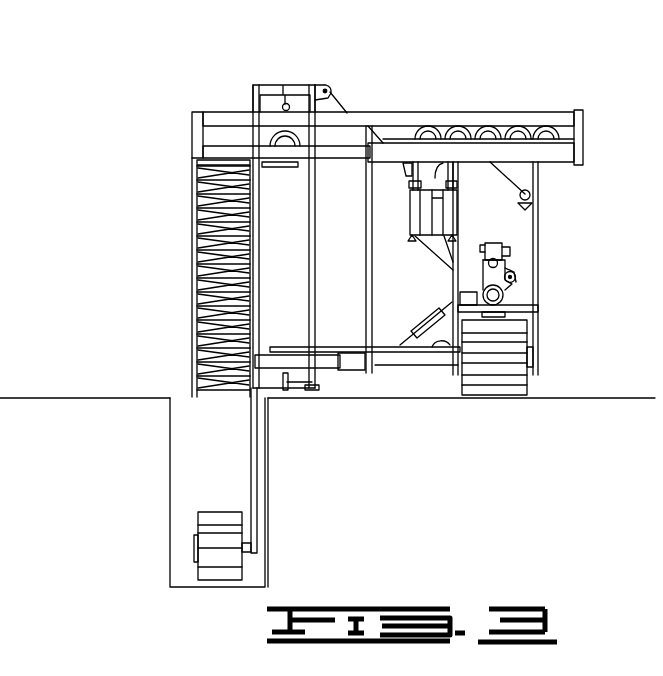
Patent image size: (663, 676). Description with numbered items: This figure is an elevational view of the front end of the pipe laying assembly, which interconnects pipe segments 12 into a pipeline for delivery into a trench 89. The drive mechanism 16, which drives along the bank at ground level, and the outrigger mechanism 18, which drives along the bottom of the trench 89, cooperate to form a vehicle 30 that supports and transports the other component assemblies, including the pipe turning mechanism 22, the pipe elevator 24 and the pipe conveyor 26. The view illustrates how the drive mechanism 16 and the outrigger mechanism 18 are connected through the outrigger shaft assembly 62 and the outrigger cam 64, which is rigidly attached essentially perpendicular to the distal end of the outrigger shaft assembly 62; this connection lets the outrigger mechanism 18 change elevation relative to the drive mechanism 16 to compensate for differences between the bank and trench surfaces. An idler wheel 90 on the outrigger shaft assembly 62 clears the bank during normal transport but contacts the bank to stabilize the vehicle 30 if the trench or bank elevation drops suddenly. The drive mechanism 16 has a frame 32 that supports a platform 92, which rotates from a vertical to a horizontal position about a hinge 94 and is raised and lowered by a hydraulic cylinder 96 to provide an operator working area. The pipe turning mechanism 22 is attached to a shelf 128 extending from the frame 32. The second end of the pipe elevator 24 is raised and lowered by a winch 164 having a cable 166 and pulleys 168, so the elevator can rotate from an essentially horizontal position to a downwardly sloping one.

The pipe segments 12 is at (268, 136).
The drive mechanism 16 is at (322, 342).
The outrigger mechanism 18 is at (233, 510).
The pipe turning mechanism 22 is at (428, 218).
The pipe elevator 24 is at (268, 168).
The pipe conveyor 26 is at (197, 251).
The vehicle 30 is at (328, 246).
The frame 32 is at (458, 238).
The outrigger shaft assembly 62 is at (359, 372).
The outrigger cam 64 is at (254, 453).
The trench 89 is at (186, 413).
The idler wheel 90 is at (287, 392).
The platform 92 is at (290, 346).
The hinge 94 is at (432, 345).
The hydraulic cylinder 96 is at (431, 318).
The shelf 128 is at (437, 259).
The winch 164 is at (350, 107).
The cable 166 is at (345, 110).
The pulleys 168 is at (321, 86).